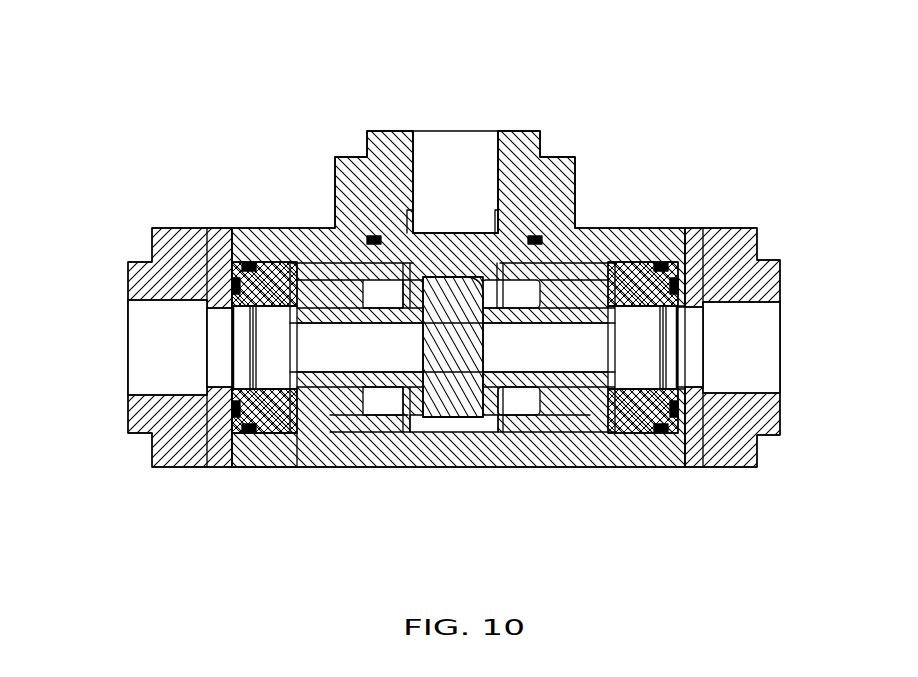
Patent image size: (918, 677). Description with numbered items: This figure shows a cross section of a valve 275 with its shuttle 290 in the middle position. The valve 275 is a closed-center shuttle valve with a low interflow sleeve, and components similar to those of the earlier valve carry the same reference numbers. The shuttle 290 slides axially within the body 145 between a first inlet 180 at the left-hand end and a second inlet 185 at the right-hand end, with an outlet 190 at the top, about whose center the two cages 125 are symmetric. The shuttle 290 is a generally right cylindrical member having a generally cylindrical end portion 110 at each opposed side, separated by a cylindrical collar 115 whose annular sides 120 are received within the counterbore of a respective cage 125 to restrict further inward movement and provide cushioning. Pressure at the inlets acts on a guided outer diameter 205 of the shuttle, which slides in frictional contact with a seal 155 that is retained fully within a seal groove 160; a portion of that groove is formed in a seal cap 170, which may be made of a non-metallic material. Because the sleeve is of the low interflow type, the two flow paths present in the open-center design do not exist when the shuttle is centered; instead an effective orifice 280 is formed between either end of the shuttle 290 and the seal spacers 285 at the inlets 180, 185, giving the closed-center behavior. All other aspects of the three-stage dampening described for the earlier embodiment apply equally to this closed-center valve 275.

The end portion 110 is at (575, 440).
The collar 115 is at (465, 410).
The annular side 120 is at (375, 131).
The cage 125 is at (375, 425).
The body 145 is at (247, 450).
The seal 155 is at (233, 320).
The seal groove 160 is at (233, 373).
The seal cap 170 is at (235, 300).
The first inlet 180 is at (153, 297).
The second inlet 185 is at (760, 302).
The outlet 190 is at (487, 131).
The guided outer diameter 205 is at (365, 240).
The valve 275 is at (768, 49).
The effective orifice 280 is at (288, 300).
The seal spacer 285 is at (245, 262).
The shuttle 290 is at (340, 378).